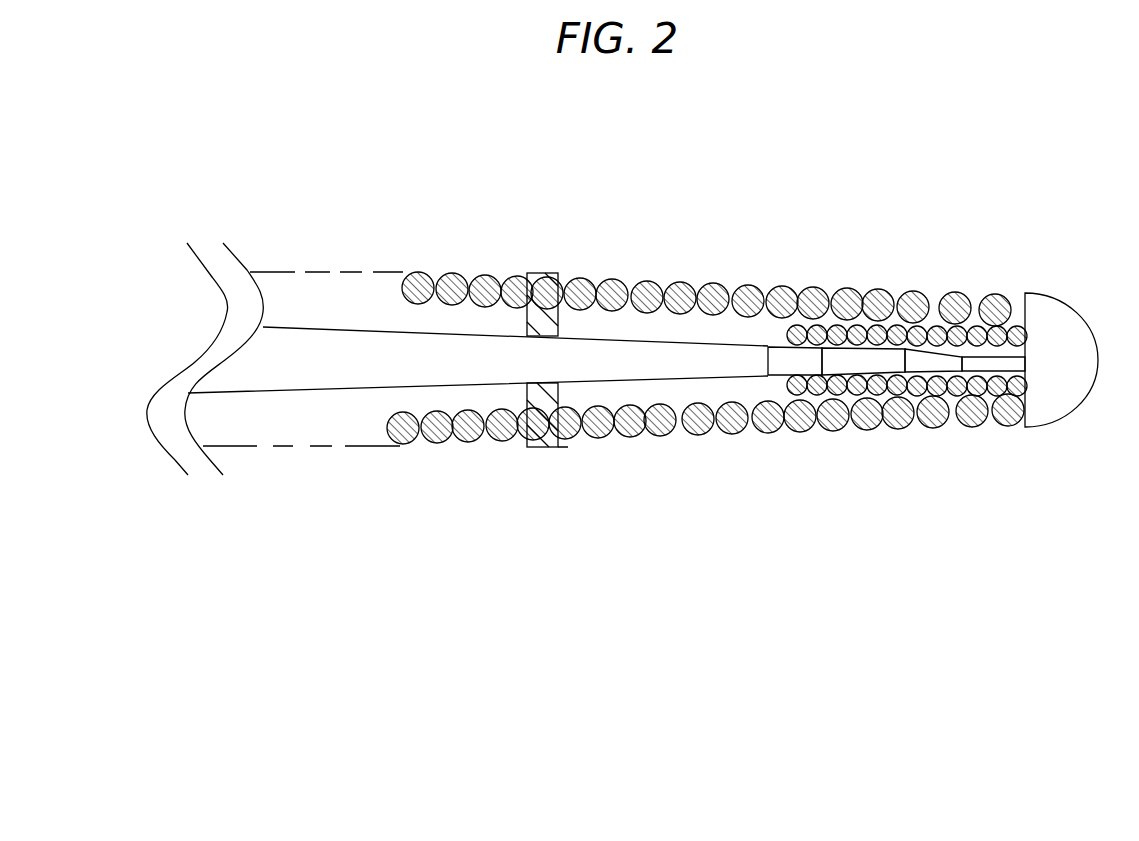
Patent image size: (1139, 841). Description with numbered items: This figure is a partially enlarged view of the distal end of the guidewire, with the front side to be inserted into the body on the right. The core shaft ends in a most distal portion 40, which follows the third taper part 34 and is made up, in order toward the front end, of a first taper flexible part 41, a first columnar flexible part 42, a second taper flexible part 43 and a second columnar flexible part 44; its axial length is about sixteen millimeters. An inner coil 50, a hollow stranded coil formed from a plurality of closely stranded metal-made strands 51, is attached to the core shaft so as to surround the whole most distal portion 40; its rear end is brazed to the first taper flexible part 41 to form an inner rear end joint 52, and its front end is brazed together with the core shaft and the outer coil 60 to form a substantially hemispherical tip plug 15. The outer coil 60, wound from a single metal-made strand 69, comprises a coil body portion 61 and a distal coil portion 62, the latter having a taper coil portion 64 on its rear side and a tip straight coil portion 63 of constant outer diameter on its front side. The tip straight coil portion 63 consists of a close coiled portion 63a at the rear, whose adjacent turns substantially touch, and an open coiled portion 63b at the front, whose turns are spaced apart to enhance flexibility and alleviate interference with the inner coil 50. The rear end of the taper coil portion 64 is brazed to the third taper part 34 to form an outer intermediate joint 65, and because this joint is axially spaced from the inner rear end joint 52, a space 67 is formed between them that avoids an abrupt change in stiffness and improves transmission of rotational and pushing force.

The tip plug 15 is at (1077, 399).
The third taper part 34 is at (657, 363).
The most distal portion 40 is at (896, 461).
The first taper flexible part 41 is at (802, 362).
The first columnar flexible part 42 is at (863, 362).
The second taper flexible part 43 is at (928, 362).
The second columnar flexible part 44 is at (987, 448).
The inner coil 50 is at (1025, 322).
The metal-made strands 51 is at (998, 390).
The inner rear end joint 52 is at (887, 436).
The outer coil 60 is at (475, 412).
The coil body portion 61 is at (547, 208).
The distal coil portion 62 is at (1023, 209).
The tip straight coil portion 63 is at (868, 246).
The close coiled portion 63a is at (867, 289).
The open coiled portion 63b is at (938, 289).
The taper coil portion 64 is at (553, 246).
The outer intermediate joint 65 is at (538, 440).
The space 67 is at (705, 390).
The metal-made strand 69 is at (462, 443).